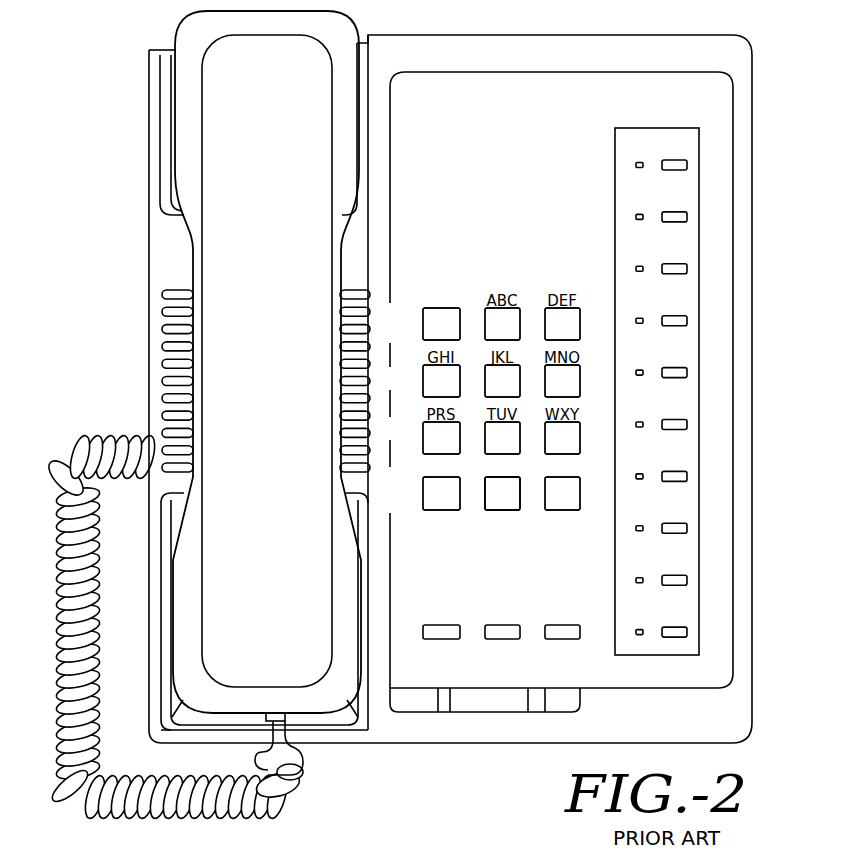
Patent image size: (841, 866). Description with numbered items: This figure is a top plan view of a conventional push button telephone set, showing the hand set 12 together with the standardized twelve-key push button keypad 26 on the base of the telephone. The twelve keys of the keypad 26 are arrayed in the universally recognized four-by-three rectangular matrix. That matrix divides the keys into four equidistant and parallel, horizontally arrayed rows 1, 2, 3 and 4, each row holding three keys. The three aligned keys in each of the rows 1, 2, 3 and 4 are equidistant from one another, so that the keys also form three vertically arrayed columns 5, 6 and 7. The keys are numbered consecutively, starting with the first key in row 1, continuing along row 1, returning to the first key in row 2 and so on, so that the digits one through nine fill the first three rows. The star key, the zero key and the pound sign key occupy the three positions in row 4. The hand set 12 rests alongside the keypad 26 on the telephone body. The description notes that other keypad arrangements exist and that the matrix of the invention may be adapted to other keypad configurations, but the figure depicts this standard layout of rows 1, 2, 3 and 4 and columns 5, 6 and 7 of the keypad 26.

The hand set 12 is at (235, 110).
The row 1 is at (408, 324).
The row 2 is at (408, 381).
The row 3 is at (408, 437).
The row 4 is at (408, 493).
The column 5 is at (441, 272).
The column 6 is at (502, 272).
The column 7 is at (562, 272).
The keypad 26 is at (503, 538).